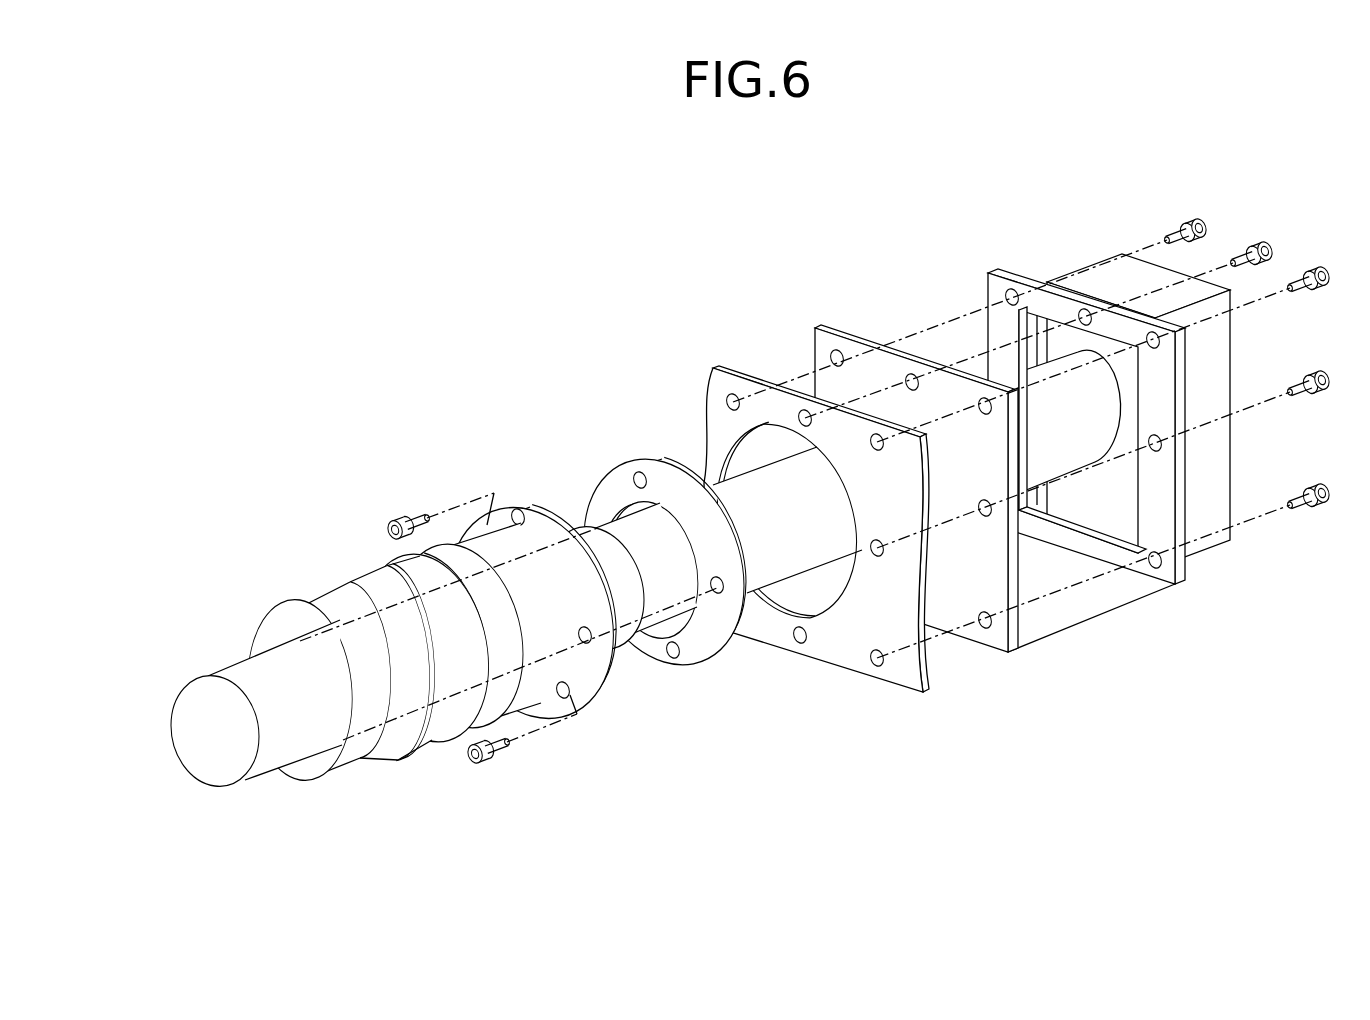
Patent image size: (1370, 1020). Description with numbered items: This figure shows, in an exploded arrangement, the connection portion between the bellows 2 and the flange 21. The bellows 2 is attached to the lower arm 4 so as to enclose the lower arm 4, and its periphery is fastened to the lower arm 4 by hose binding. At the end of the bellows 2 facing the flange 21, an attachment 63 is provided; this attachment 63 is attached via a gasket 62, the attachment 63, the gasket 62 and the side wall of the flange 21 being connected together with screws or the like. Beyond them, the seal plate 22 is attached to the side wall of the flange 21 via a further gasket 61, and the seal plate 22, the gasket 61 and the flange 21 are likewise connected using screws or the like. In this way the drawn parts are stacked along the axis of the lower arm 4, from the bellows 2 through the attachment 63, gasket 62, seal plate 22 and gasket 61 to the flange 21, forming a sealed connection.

The bellows 2 is at (330, 598).
The lower arm 4 is at (208, 768).
The flange 21 is at (1200, 560).
The seal plate 22 is at (797, 648).
The gasket 61 is at (982, 640).
The gasket 62 is at (607, 487).
The attachment 63 is at (582, 685).